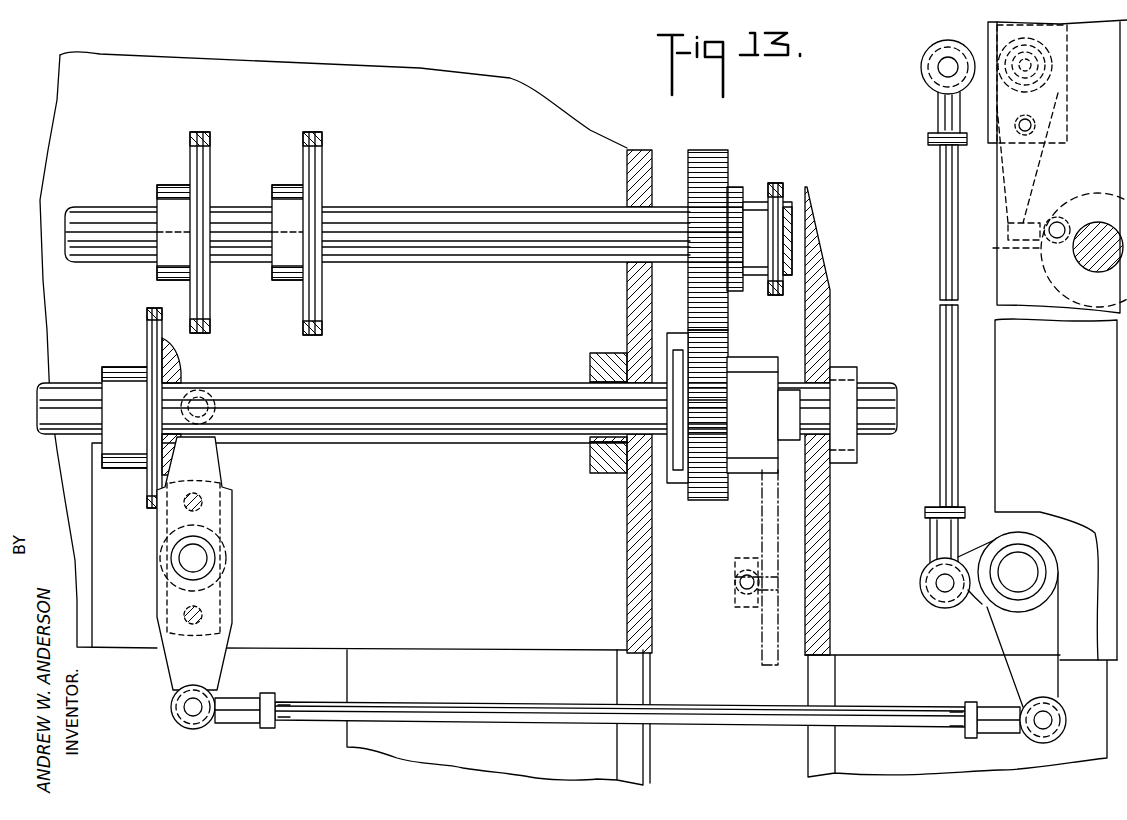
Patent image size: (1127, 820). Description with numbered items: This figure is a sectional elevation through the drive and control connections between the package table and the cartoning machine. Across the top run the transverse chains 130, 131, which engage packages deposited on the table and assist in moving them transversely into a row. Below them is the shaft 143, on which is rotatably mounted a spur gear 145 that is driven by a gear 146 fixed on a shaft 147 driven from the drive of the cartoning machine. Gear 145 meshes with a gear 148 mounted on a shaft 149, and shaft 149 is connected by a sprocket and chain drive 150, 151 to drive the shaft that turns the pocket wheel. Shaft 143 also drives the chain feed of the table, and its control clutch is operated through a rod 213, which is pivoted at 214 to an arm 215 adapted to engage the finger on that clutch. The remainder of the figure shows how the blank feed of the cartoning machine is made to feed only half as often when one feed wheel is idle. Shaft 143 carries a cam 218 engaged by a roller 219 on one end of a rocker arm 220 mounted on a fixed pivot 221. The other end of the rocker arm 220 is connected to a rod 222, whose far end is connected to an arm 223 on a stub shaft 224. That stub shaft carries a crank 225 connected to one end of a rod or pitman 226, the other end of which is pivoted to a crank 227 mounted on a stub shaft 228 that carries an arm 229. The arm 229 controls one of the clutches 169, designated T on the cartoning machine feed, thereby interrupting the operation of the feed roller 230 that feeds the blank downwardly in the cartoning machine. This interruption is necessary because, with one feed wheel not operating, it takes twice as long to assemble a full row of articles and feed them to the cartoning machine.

The transverse chain 130 is at (322, 140).
The transverse chain 131 is at (207, 142).
The shaft 143 is at (400, 394).
The spur gear 145 is at (682, 500).
The gear 146 is at (722, 500).
The shaft 147 is at (878, 392).
The gear 148 is at (718, 152).
The shaft 149 is at (453, 222).
The sprocket and chain drive 150 is at (790, 225).
The sprocket and chain drive 151 is at (785, 188).
The clutch 169 is at (1078, 203).
The rod 213 is at (745, 583).
The pivot 214 is at (763, 575).
The arm 215 is at (762, 628).
The cam 218 is at (152, 350).
The roller 219 is at (215, 395).
The rocker arm 220 is at (217, 592).
The fixed pivot 221 is at (200, 560).
The rod 222 is at (452, 706).
The arm 223 is at (1005, 630).
The stub shaft 224 is at (1028, 565).
The crank 225 is at (962, 606).
The rod or pitman 226 is at (940, 468).
The crank 227 is at (975, 55).
The stub shaft 228 is at (1048, 66).
The arm 229 is at (1035, 163).
The feed roller 230 is at (1056, 275).
The clutch T is at (1004, 249).